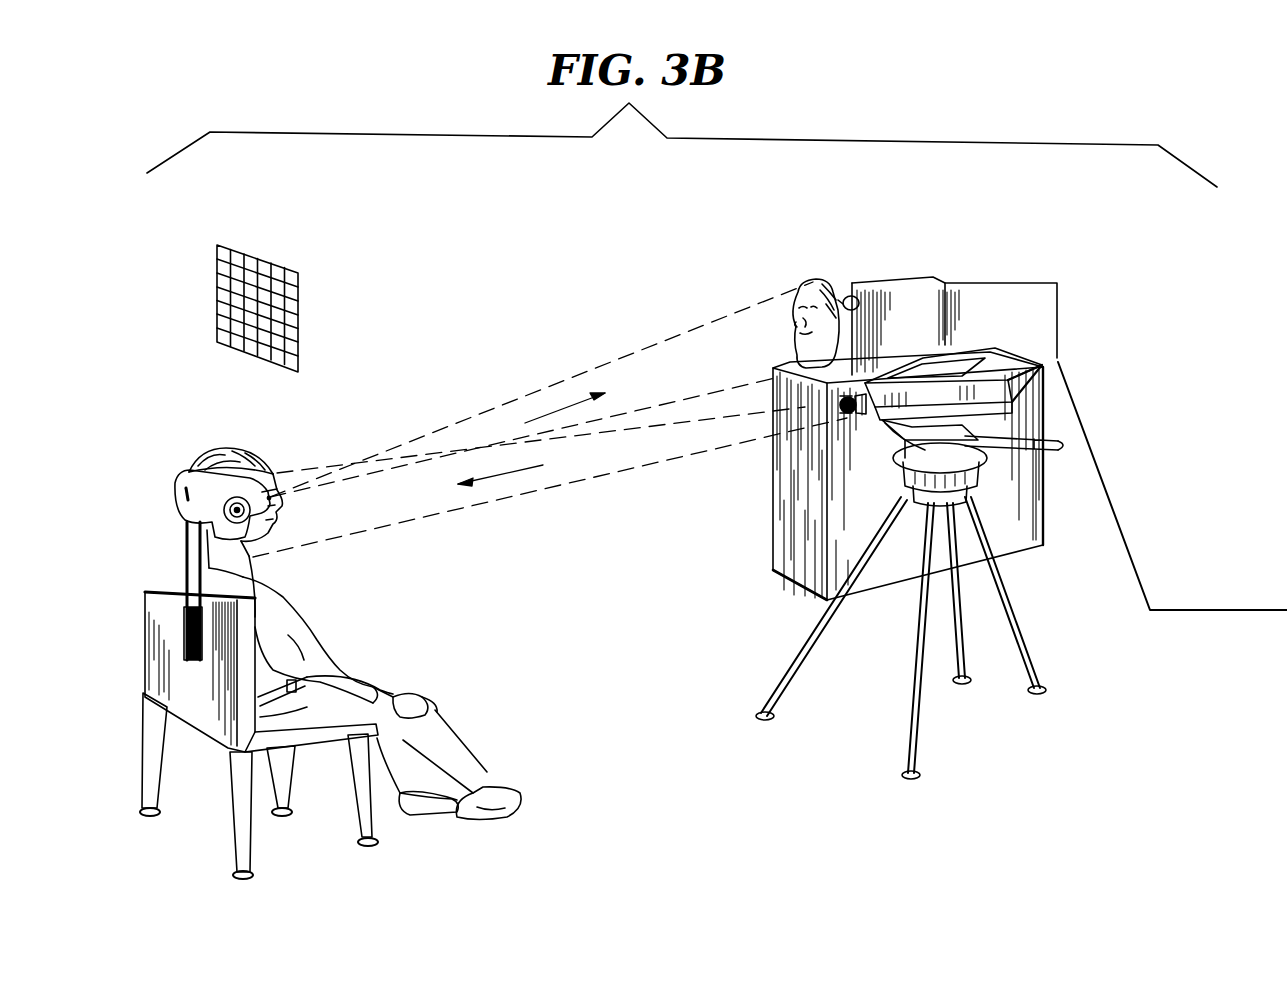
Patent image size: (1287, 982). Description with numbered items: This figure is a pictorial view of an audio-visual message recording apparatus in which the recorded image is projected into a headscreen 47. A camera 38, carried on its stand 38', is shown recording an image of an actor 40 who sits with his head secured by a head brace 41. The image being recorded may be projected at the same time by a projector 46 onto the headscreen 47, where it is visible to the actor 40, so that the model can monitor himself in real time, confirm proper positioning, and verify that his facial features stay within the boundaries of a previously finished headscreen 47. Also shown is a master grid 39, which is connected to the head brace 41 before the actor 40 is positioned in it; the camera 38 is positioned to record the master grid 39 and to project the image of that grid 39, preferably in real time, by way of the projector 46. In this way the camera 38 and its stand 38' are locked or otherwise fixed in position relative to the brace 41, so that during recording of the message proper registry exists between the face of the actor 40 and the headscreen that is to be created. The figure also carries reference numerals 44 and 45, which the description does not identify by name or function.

The camera 38 is at (989, 387).
The stand 38' is at (839, 607).
The master grid 39 is at (268, 262).
The actor 40 is at (293, 600).
The head brace 41 is at (182, 480).
The line of sight to camera 44 is at (707, 440).
The line of sight to model head 45 is at (520, 397).
The projector 46 is at (900, 282).
The headscreen 47 is at (805, 292).